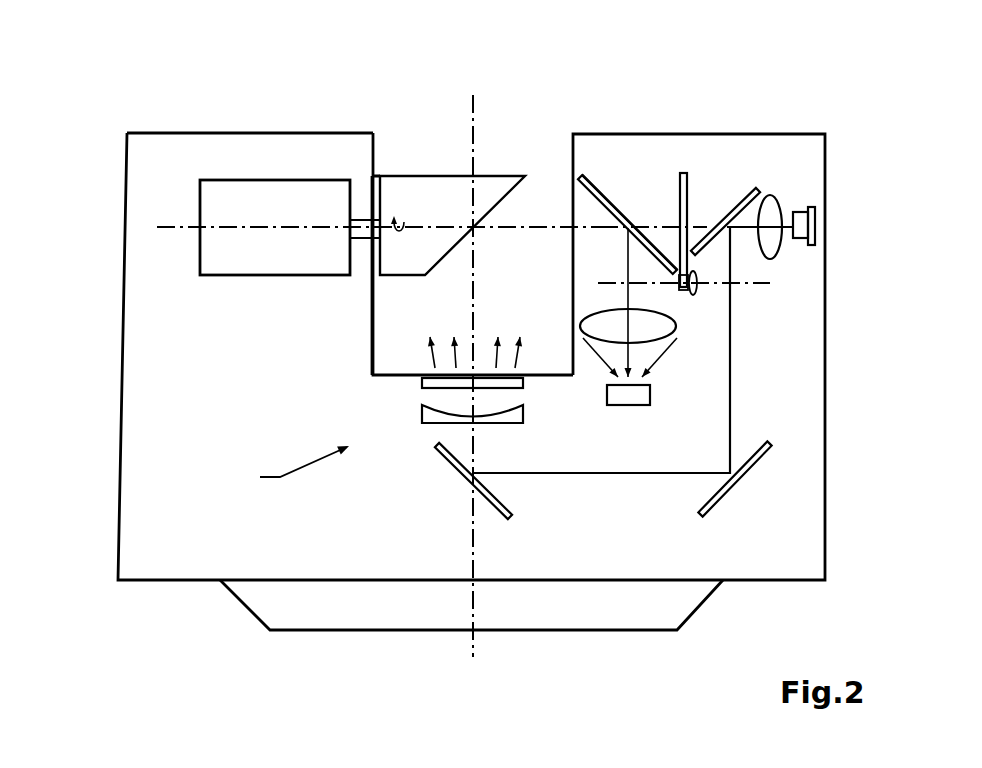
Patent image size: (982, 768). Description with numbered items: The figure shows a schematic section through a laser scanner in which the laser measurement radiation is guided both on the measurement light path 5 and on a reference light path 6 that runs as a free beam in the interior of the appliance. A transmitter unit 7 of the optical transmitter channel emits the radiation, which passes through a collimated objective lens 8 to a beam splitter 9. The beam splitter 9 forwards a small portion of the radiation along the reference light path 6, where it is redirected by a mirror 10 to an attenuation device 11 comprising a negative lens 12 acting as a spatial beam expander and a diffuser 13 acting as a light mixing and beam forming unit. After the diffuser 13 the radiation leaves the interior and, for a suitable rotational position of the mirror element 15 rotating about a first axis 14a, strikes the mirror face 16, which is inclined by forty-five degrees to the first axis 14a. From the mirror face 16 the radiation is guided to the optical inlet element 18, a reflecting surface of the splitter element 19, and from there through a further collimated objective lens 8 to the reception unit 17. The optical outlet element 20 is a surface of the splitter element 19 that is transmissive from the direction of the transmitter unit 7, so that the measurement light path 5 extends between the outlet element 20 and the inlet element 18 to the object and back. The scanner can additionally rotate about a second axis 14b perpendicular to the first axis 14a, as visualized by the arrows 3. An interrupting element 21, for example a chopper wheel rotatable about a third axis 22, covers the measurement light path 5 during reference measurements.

The arrows 3 is at (393, 225).
The measurement light path 5 is at (700, 225).
The reference light path 6 is at (560, 473).
The transmitter unit 7 is at (810, 223).
The collimated objective lens 8 is at (770, 213).
The beam splitter 9 is at (760, 190).
The mirror 10 is at (702, 515).
The attenuation device 11 is at (290, 473).
The negative lens 12 is at (424, 422).
The diffuser 13 is at (424, 381).
The first axis 14a is at (163, 228).
The second axis 14b is at (477, 100).
The mirror element 15 is at (442, 183).
The mirror face 16 is at (450, 247).
The reception unit 17 is at (637, 397).
The optical inlet element 18 is at (585, 198).
The splitter element 19 is at (581, 179).
The optical outlet element 20 is at (598, 187).
The interrupting element 21 is at (684, 193).
The third axis 22 is at (740, 283).